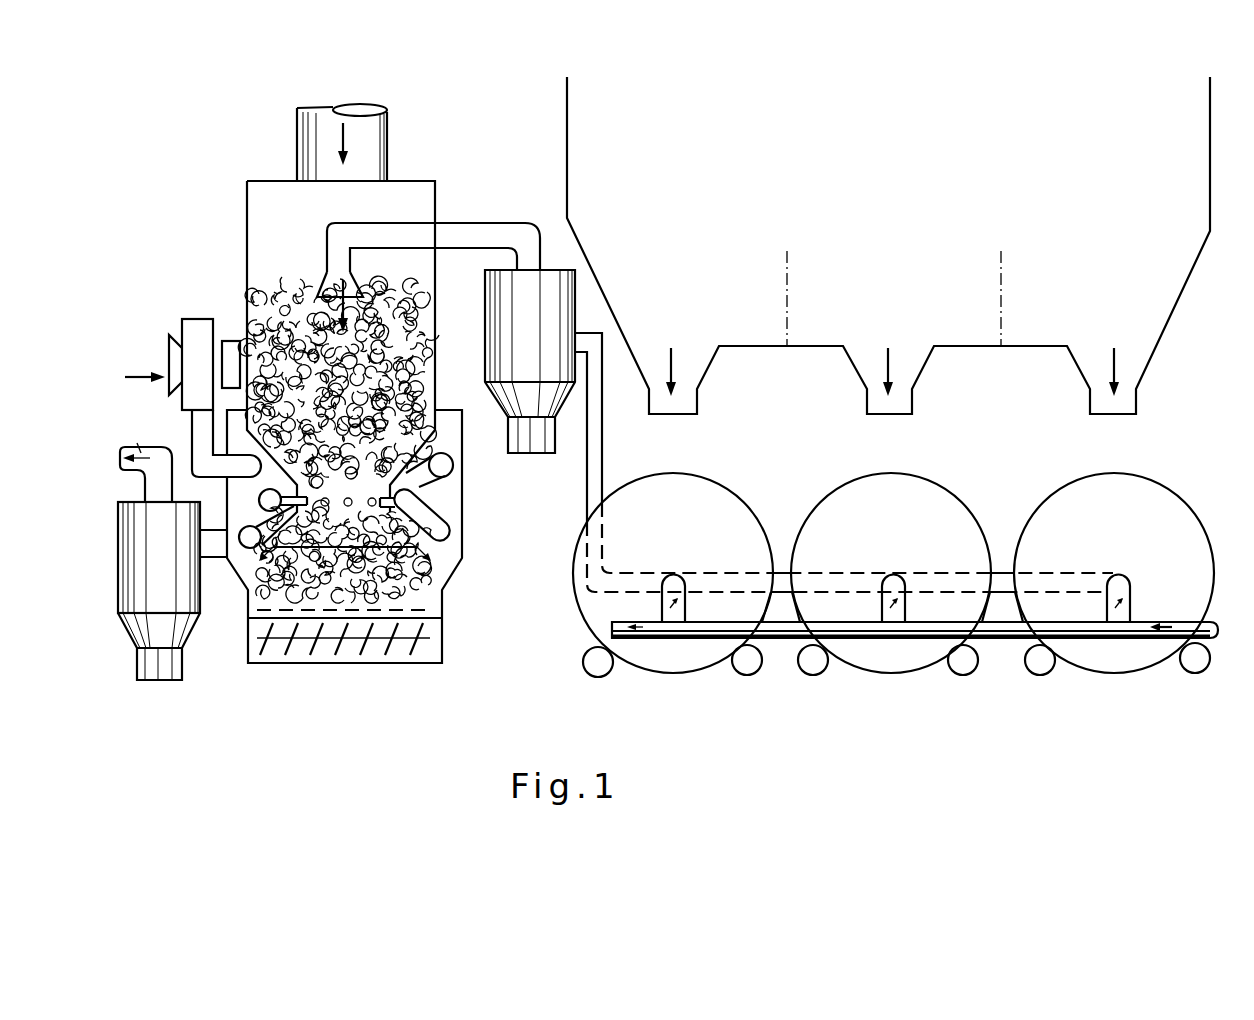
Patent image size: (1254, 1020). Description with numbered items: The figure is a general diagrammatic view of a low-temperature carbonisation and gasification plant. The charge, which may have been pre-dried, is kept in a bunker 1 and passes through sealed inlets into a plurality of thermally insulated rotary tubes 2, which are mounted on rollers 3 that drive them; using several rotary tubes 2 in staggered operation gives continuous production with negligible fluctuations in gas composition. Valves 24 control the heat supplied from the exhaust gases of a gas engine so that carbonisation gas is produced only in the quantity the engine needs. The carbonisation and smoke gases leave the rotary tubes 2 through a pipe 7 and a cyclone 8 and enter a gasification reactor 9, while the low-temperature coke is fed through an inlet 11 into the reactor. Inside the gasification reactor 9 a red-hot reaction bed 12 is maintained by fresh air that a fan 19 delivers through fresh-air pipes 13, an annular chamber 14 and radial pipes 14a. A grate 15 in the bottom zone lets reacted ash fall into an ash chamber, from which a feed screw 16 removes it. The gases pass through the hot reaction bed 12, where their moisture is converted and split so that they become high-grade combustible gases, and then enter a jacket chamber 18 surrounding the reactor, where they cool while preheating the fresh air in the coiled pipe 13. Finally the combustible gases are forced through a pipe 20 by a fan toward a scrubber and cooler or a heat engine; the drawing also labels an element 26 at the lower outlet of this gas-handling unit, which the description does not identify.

The bunker 1 is at (879, 163).
The rotary tubes 2 is at (705, 502).
The rollers 3 is at (603, 667).
The pipe 7 is at (337, 260).
The cyclone 8 is at (548, 279).
The gasification reactor 9 is at (260, 253).
The inlet 11 is at (378, 140).
The reaction bed 12 is at (368, 482).
The fresh-air pipes 13 is at (199, 465).
The annular chamber 14 is at (430, 518).
The radial pipes 14a is at (448, 468).
The grate 15 is at (262, 610).
The feed screw 16 is at (398, 640).
The jacket chamber 18 is at (452, 555).
The fan 19 is at (197, 332).
The pipe 20 is at (210, 543).
The valves 24 is at (637, 626).
The outlet 26 is at (175, 607).